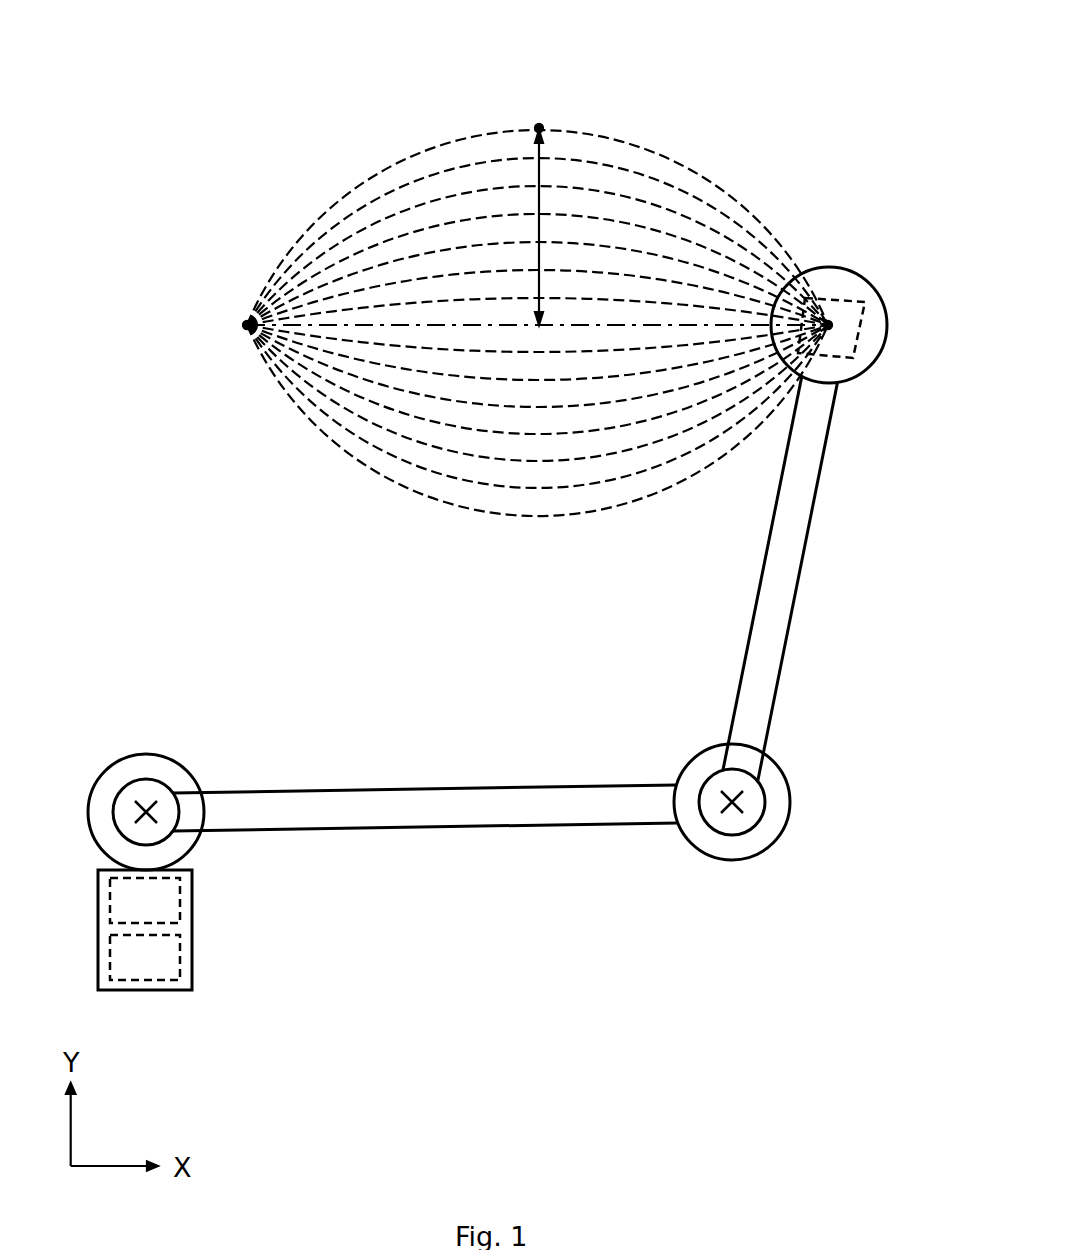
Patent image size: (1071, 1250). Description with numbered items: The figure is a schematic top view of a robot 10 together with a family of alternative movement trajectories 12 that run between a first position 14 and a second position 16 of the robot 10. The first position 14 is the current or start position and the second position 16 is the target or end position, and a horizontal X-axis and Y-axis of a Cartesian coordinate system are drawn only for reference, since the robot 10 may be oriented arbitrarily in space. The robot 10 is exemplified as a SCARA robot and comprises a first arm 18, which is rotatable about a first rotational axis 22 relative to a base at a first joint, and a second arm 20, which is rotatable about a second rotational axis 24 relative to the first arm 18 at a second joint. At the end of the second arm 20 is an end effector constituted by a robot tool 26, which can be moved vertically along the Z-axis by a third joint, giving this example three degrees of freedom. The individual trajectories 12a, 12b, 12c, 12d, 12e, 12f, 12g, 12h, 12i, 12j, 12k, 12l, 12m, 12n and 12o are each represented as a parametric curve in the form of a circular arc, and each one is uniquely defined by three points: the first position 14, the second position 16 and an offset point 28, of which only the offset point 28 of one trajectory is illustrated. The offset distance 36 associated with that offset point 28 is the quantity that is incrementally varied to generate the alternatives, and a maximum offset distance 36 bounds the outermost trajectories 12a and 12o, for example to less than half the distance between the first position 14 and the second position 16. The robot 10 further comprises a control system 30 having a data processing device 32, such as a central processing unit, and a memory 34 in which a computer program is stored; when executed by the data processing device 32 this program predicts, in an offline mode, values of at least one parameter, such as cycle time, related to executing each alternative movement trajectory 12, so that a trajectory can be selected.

The robot 10 is at (703, 947).
The movement trajectories 12 is at (212, 82).
The movement trajectory 12a is at (503, 131).
The movement trajectory 12b is at (458, 166).
The movement trajectory 12c is at (430, 200).
The movement trajectory 12d is at (398, 234).
The movement trajectory 12e is at (365, 268).
The movement trajectory 12f is at (327, 298).
The movement trajectory 12g is at (303, 313).
The movement trajectory 12h is at (268, 322).
The movement trajectory 12i is at (305, 337).
The movement trajectory 12j is at (325, 353).
The movement trajectory 12k is at (363, 382).
The movement trajectory 12l is at (398, 415).
The movement trajectory 12m is at (427, 452).
The movement trajectory 12n is at (458, 483).
The movement trajectory 12o is at (503, 518).
The first position 14 is at (828, 325).
The second position 16 is at (247, 325).
The first arm 18 is at (432, 810).
The second arm 20 is at (780, 578).
The first rotational axis 22 is at (146, 812).
The second rotational axis 24 is at (735, 800).
The robot tool 26 is at (850, 297).
The offset point 28 is at (538, 127).
The control system 30 is at (111, 930).
The data processing device 32 is at (145, 900).
The memory 34 is at (145, 957).
The offset distance 36 is at (541, 181).